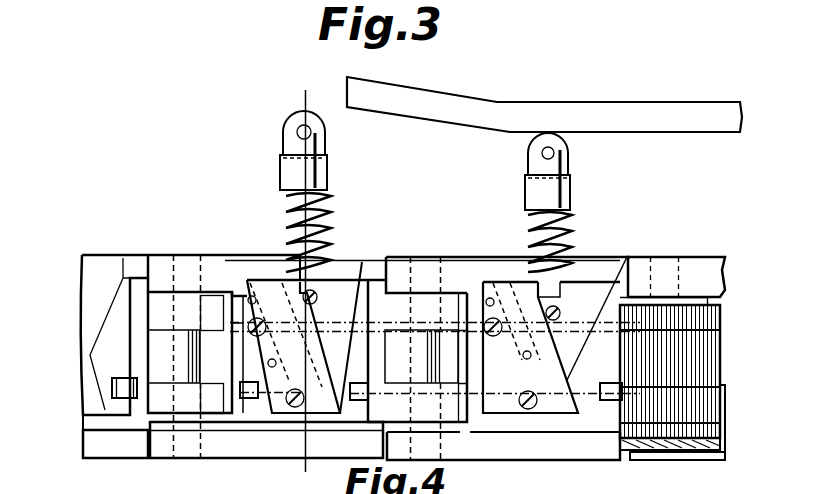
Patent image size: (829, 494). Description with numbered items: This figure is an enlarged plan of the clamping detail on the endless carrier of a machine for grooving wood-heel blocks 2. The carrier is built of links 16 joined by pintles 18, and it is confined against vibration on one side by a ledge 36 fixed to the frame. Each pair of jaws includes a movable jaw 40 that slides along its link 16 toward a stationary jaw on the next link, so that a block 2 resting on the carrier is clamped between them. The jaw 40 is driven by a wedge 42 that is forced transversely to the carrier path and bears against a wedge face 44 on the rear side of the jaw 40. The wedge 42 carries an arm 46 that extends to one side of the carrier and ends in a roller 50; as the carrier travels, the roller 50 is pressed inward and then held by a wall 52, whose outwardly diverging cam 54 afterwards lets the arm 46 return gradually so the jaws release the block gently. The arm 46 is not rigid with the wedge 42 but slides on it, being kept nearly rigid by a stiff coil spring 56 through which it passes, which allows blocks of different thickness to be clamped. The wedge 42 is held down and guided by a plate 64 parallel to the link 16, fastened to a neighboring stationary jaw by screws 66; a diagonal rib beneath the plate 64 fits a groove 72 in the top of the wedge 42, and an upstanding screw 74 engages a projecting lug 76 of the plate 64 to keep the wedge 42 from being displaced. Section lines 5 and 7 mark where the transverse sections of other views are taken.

The wood-heel block 2 is at (722, 368).
The section line 5— 5 is at (305, 98).
The section line 7— 7 is at (262, 400).
The link 16 is at (84, 426).
The pintle 18 is at (182, 366).
The ledge 36 is at (256, 415).
The movable jaw 40 is at (120, 414).
The wedge 42 is at (334, 262).
The wedge face 44 is at (352, 290).
The arm 46 is at (286, 208).
The roller 50 is at (322, 144).
The wall 52 is at (530, 98).
The outwardly diverging cam 54 is at (450, 114).
The coil spring 56 is at (284, 190).
The plate 64 is at (268, 332).
The screw 66 is at (250, 318).
The groove 72 is at (272, 275).
The upstanding screw 74 is at (290, 300).
The projecting lug 76 is at (308, 288).